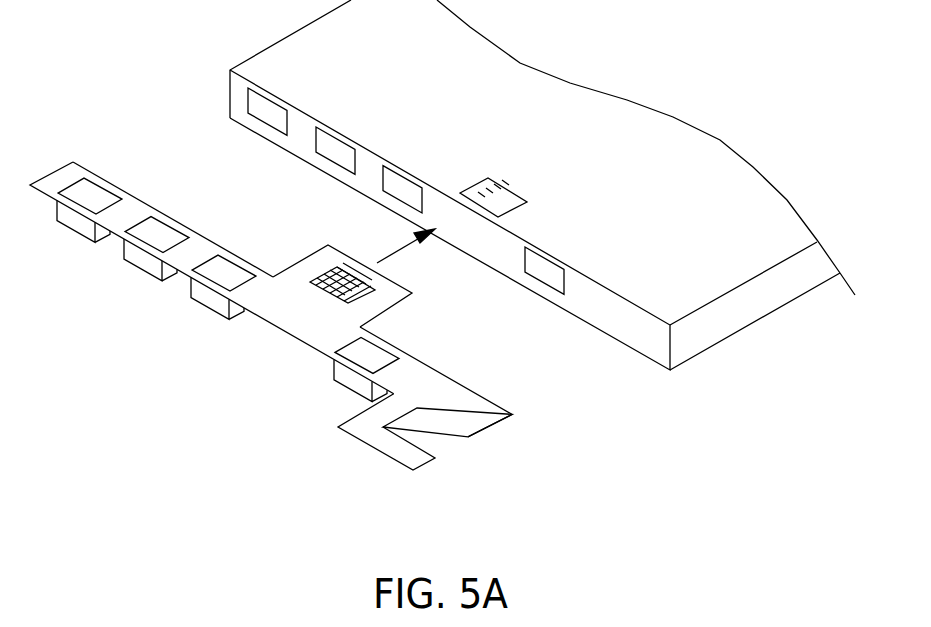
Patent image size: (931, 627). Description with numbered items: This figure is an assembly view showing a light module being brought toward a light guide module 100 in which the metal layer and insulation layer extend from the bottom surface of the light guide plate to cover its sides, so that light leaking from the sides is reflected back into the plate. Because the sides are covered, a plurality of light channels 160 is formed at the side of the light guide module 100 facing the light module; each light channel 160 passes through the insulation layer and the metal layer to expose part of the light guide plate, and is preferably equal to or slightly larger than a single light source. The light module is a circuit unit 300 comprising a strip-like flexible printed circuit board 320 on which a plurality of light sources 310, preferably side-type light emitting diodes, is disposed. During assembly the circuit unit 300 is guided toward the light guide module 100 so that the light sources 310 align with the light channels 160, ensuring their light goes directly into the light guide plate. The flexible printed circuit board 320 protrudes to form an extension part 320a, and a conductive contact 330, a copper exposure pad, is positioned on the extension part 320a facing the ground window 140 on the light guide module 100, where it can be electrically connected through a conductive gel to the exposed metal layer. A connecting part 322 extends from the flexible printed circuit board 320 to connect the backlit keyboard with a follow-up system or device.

The light guide module 100 is at (770, 147).
The ground window 140 is at (521, 194).
The light channels 160 is at (403, 197).
The circuit unit 300 is at (472, 373).
The light sources 310 is at (348, 380).
The flexible printed circuit board 320 is at (480, 417).
The extension part 320a is at (382, 300).
The connecting part 322 is at (418, 463).
The conductive contact 330 is at (372, 282).